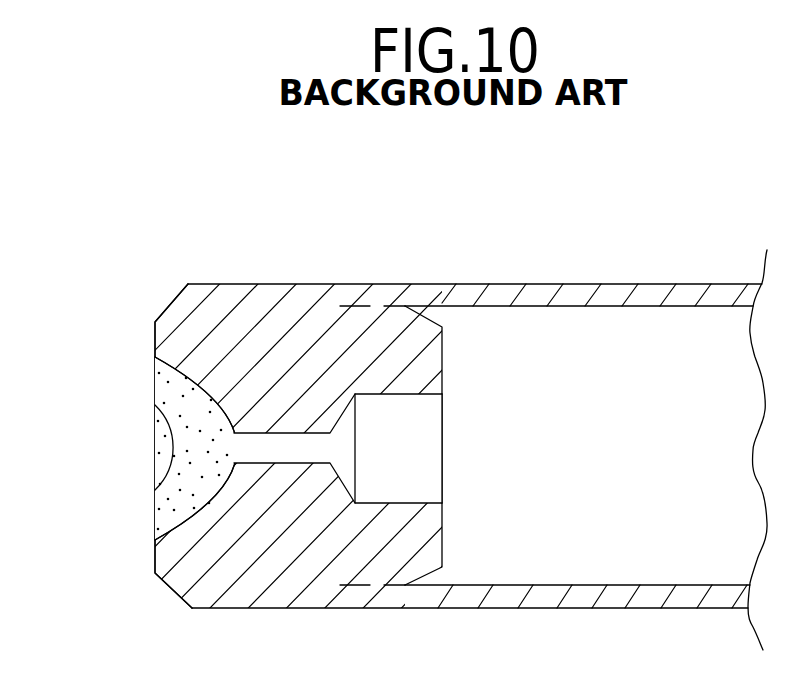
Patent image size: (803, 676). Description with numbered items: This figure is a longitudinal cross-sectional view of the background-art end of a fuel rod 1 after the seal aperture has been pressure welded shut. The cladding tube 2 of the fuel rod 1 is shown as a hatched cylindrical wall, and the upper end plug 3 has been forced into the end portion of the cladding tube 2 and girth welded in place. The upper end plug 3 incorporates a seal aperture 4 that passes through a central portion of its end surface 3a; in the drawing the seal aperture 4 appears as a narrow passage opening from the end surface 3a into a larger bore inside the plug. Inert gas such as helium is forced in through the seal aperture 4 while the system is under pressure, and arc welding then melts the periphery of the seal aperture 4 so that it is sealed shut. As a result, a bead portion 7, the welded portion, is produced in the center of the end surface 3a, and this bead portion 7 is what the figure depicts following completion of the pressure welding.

The fuel rod 1 is at (404, 236).
The cladding tube 2 is at (585, 284).
The upper end plug 3 is at (310, 284).
The end surface 3a is at (156, 558).
The seal aperture 4 is at (307, 463).
The bead portion 7 is at (163, 430).